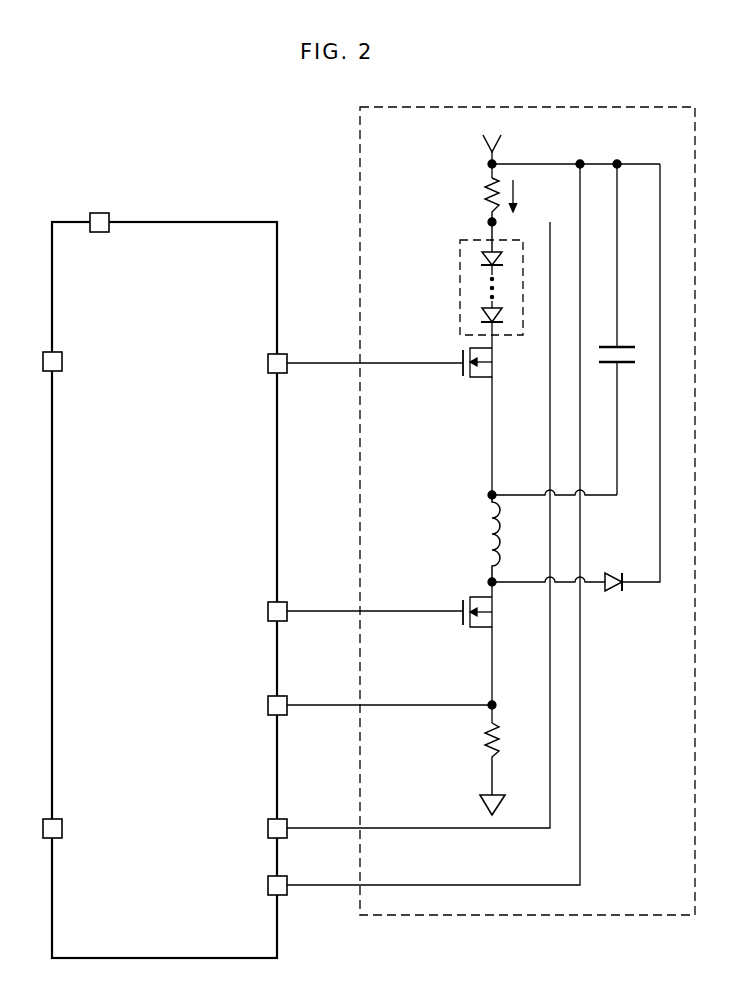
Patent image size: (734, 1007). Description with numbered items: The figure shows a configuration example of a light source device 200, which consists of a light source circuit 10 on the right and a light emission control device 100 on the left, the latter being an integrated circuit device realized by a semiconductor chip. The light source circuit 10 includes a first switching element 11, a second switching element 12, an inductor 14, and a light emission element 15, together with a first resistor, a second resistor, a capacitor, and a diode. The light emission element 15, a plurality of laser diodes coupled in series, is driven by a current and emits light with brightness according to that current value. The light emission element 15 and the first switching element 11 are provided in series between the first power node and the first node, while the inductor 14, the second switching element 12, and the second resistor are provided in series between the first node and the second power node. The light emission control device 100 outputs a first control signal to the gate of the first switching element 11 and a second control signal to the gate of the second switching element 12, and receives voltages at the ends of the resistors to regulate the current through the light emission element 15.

The light source device 200 is at (118, 170).
The light emission control device 100 is at (203, 222).
The light source circuit 10 is at (360, 127).
The light emission element 15 is at (460, 283).
The first switching element 11 is at (472, 380).
The inductor 14 is at (492, 532).
The second switching element 12 is at (476, 597).